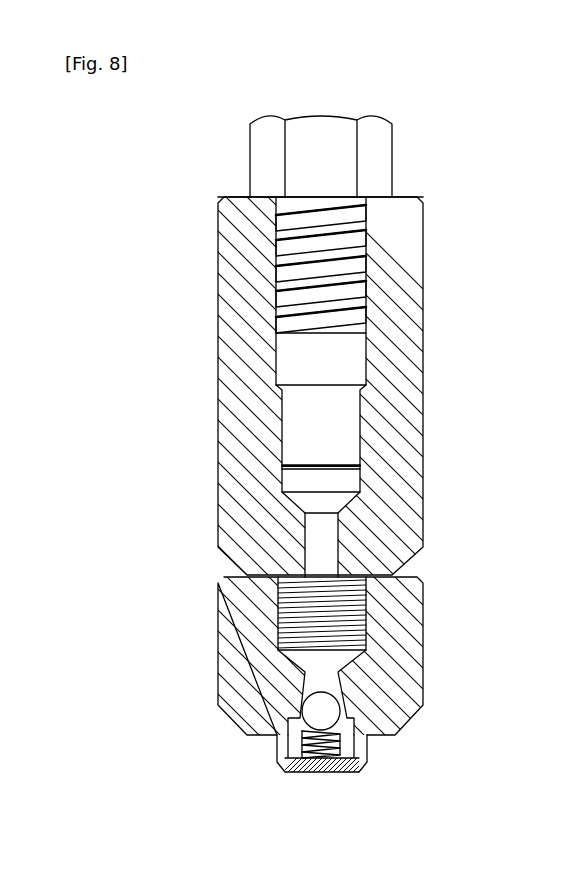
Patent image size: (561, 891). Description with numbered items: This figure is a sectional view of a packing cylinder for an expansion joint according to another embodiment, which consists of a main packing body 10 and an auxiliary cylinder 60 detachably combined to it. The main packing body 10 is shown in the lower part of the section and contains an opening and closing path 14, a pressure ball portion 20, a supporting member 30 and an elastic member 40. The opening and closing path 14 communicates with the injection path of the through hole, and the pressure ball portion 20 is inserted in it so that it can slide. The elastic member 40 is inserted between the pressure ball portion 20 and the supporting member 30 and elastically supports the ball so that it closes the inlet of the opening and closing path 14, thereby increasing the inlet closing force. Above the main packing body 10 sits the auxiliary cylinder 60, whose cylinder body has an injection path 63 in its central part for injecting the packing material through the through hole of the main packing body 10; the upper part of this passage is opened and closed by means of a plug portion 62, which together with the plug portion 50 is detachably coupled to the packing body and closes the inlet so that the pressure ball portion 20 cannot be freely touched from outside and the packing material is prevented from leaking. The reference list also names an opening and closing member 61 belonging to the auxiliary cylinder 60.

The main packing body 10 is at (235, 606).
The opening and closing path 14 is at (280, 637).
The pressure ball portion 20 is at (312, 710).
The supporting member 30 is at (298, 775).
The elastic member 40 is at (302, 748).
The plug portion 50 is at (272, 224).
The auxiliary cylinder 60 is at (280, 350).
The opening and closing member 61 is at (233, 356).
The plug portion 62 is at (249, 139).
The injection path 63 is at (315, 525).